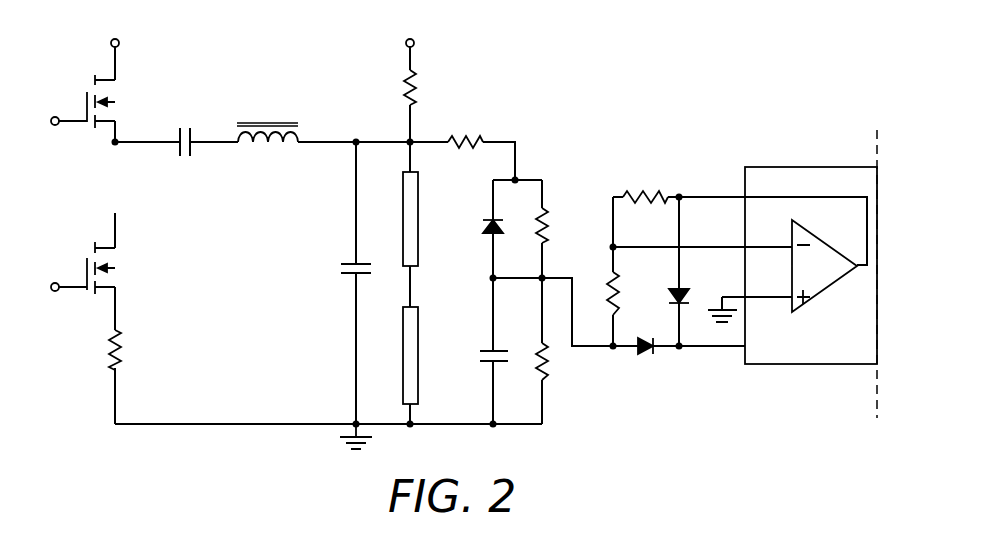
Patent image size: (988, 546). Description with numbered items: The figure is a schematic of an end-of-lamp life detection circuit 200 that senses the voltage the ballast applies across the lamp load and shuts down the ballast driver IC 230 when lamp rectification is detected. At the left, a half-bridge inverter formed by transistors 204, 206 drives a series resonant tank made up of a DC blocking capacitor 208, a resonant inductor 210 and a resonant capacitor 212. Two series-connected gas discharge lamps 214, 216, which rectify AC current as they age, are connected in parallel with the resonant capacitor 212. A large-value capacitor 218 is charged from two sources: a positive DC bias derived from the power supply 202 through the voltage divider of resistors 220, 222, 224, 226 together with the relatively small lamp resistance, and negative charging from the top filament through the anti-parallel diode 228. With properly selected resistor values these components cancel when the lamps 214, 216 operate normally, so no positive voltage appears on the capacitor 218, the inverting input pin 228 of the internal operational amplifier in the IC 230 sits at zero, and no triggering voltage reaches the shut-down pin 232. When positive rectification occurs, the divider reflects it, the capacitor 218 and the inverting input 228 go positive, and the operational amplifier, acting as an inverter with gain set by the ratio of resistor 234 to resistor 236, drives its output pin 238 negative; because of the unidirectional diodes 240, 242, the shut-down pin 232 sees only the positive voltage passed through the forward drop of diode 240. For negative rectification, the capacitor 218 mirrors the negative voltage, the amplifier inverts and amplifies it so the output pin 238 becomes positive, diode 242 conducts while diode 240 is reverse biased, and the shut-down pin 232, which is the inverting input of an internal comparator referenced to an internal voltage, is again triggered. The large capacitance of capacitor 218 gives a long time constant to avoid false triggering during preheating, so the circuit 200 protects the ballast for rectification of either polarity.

The end-of-lamp life detection circuit 200 is at (662, 446).
The power supply 202 is at (413, 40).
The transistor 204 is at (118, 93).
The transistor 206 is at (117, 258).
The DC blocking capacitor 208 is at (188, 133).
The resonant inductor 210 is at (268, 146).
The resonant capacitor 212 is at (341, 274).
The gas discharge lamp 214 is at (418, 223).
The gas discharge lamp 216 is at (418, 342).
The capacitor 218 is at (487, 365).
The resistor 220 is at (418, 82).
The resistor 222 is at (463, 140).
The resistor 224 is at (546, 212).
The resistor 226 is at (550, 365).
The anti-parallel diode / inverting input pin 228 is at (485, 225).
The ballast driver IC 230 is at (778, 165).
The shut-down pin 232 is at (697, 347).
The resistor 234 is at (660, 193).
The resistor 236 is at (603, 285).
The output pin 238 is at (702, 197).
The diode 240 is at (643, 352).
The diode 242 is at (668, 292).